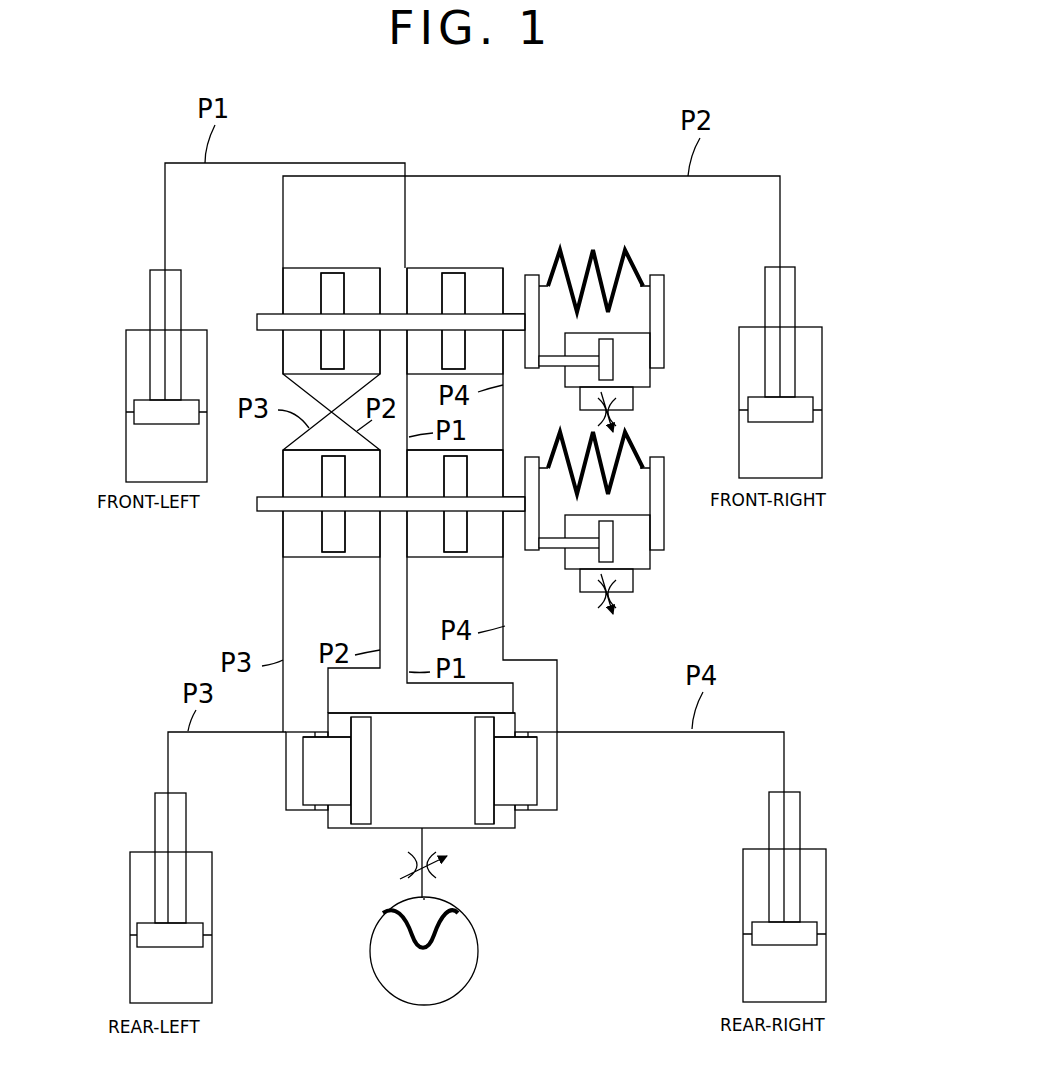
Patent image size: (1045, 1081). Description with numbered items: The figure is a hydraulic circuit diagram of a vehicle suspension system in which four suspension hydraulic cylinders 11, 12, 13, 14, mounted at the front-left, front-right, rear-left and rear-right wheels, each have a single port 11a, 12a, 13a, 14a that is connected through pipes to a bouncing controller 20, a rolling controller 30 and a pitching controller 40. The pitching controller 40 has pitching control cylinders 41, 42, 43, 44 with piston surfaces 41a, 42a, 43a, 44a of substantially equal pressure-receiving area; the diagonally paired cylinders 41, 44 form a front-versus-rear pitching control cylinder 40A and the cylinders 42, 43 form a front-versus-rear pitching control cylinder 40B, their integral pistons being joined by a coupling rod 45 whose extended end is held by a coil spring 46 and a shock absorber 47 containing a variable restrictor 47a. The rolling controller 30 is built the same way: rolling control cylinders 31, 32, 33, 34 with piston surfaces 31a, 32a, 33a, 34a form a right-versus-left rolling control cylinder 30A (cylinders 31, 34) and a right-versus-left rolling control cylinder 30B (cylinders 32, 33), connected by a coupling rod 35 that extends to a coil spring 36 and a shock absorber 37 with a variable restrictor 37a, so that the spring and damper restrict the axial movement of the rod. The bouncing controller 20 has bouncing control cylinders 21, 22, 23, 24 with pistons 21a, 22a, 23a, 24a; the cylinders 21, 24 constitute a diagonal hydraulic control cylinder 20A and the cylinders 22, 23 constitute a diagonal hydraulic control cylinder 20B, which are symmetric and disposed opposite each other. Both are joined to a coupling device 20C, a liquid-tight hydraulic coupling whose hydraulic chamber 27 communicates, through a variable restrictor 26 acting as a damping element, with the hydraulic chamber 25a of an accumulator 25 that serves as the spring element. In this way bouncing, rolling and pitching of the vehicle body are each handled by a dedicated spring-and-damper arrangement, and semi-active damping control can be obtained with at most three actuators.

The suspension hydraulic cylinder 11 is at (125, 447).
The port 11a is at (163, 270).
The suspension hydraulic cylinder 12 is at (825, 449).
The port 12a is at (782, 267).
The suspension hydraulic cylinder 13 is at (128, 918).
The port 13a is at (168, 793).
The suspension hydraulic cylinder 14 is at (827, 917).
The port 14a is at (785, 792).
The bouncing controller 20 is at (380, 891).
The diagonal hydraulic control cylinder 20A is at (560, 768).
The diagonal hydraulic control cylinder 20B is at (283, 766).
The coupling device 20C is at (484, 937).
The bouncing control cylinder 21 is at (492, 820).
The piston 21a is at (487, 822).
The bouncing control cylinder 22 is at (330, 830).
The piston 22a is at (357, 822).
The bouncing control cylinder 23 is at (300, 810).
The piston 23a is at (297, 812).
The bouncing control cylinder 24 is at (535, 800).
The piston 24a is at (555, 812).
The accumulator 25 is at (463, 990).
The hydraulic chamber 25a is at (413, 918).
The variable restrictor 26 is at (438, 873).
The hydraulic chamber 27 is at (390, 818).
The rolling controller 30 is at (240, 562).
The right-versus-left rolling control cylinder 30A is at (509, 553).
The right-versus-left rolling control cylinder 30B is at (280, 555).
The rolling control cylinder 31 is at (430, 557).
The piston surface 31a is at (448, 534).
The rolling control cylinder 32 is at (365, 557).
The piston surface 32a is at (333, 504).
The rolling control cylinder 33 is at (310, 557).
The piston surface 33a is at (333, 556).
The rolling control cylinder 34 is at (487, 557).
The piston surface 34a is at (455, 504).
The coupling rod 35 is at (262, 512).
The coil spring 36 is at (633, 448).
The shock absorber 37 is at (580, 590).
The variable restrictor 37a is at (622, 612).
The pitching controller 40 is at (672, 302).
The front-versus-rear pitching control cylinder 40A is at (505, 267).
The front-versus-rear pitching control cylinder 40B is at (275, 265).
The pitching control cylinder 41 is at (425, 268).
The piston surface 41a is at (460, 287).
The pitching control cylinder 42 is at (302, 268).
The piston surface 42a is at (330, 287).
The pitching control cylinder 43 is at (362, 268).
The piston surface 43a is at (332, 321).
The pitching control cylinder 44 is at (483, 268).
The piston surface 44a is at (453, 321).
The coupling rod 45 is at (265, 331).
The coil spring 46 is at (634, 266).
The shock absorber 47 is at (572, 395).
The variable restrictor 47a is at (620, 417).